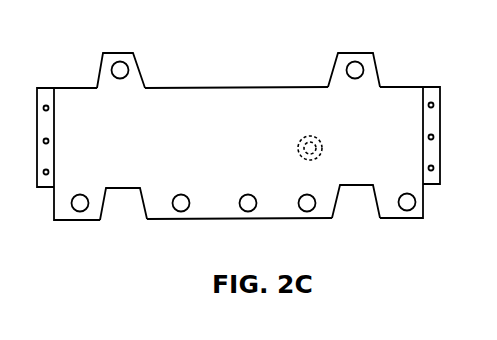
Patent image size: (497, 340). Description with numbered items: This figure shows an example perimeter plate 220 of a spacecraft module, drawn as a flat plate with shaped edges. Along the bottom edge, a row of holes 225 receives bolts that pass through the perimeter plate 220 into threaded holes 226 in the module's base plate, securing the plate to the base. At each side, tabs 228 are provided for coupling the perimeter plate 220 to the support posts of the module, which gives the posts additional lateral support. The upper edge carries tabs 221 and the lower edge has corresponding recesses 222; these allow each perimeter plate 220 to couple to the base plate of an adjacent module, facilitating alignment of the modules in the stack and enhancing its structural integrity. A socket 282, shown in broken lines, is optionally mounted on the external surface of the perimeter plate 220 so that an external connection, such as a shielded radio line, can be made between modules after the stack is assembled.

The perimeter plate 220 is at (255, 87).
The tabs 221 is at (357, 52).
The recesses 222 is at (357, 205).
The holes 225 is at (167, 217).
The threaded holes 226 is at (113, 69).
The tabs 228 is at (430, 86).
The socket 282 is at (323, 149).